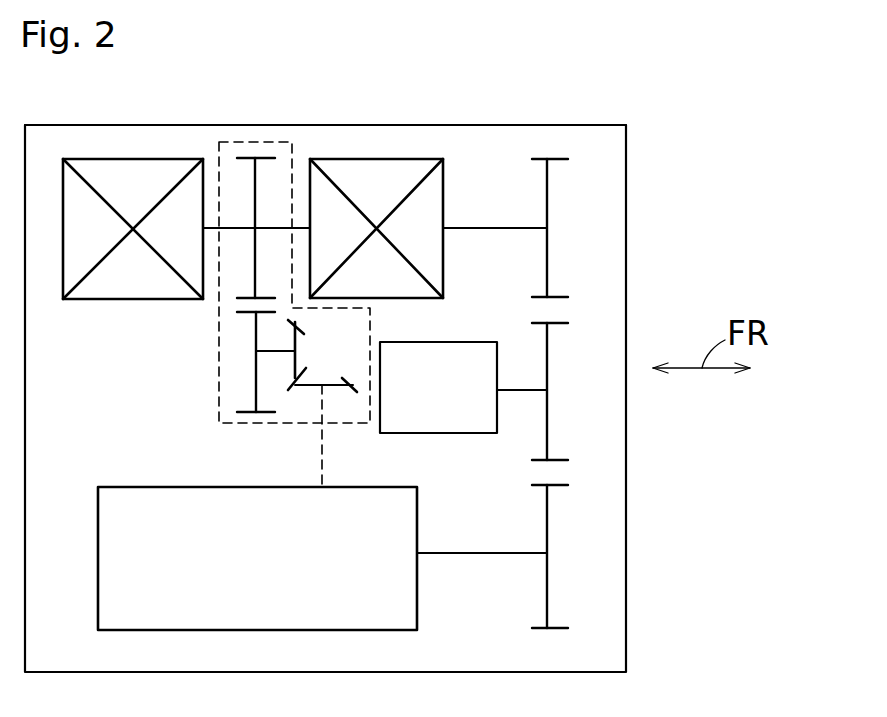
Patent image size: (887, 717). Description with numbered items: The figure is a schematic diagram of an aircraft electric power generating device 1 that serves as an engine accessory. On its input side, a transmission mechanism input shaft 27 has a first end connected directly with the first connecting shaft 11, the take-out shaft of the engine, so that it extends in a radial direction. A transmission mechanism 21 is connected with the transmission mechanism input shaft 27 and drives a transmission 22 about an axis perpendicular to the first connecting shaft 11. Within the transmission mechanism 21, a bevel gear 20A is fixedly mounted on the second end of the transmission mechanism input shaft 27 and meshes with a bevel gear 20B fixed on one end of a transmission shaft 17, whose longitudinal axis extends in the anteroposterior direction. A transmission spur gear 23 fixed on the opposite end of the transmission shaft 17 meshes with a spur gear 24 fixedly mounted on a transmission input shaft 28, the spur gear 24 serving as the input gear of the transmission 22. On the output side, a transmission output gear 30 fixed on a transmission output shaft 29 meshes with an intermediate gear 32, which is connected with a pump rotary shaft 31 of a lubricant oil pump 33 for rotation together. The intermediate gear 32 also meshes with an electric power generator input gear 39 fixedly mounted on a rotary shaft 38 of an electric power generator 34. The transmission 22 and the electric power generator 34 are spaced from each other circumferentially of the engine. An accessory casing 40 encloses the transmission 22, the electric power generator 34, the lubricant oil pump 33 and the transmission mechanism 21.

The electric power generating device 1 is at (487, 120).
The first connecting shaft 11 is at (320, 455).
The transmission shaft 17 is at (276, 352).
The bevel gear 20A is at (332, 383).
The bevel gear 20B is at (302, 360).
The transmission mechanism 21 is at (215, 355).
The transmission 22 is at (351, 154).
The transmission spur gear 23 is at (254, 333).
The spur gear 24 is at (250, 200).
The transmission mechanism input shaft 27 is at (322, 405).
The transmission input shaft 28 is at (275, 228).
The transmission output shaft 29 is at (493, 228).
The transmission output gear 30 is at (550, 205).
The pump rotary shaft 31 is at (525, 388).
The intermediate gear 32 is at (550, 423).
The lubricant oil pump 33 is at (468, 433).
The electric power generator 34 is at (98, 570).
The rotary shaft 38 is at (478, 553).
The electric power generator input gear 39 is at (548, 590).
The accessory casing 40 is at (623, 124).